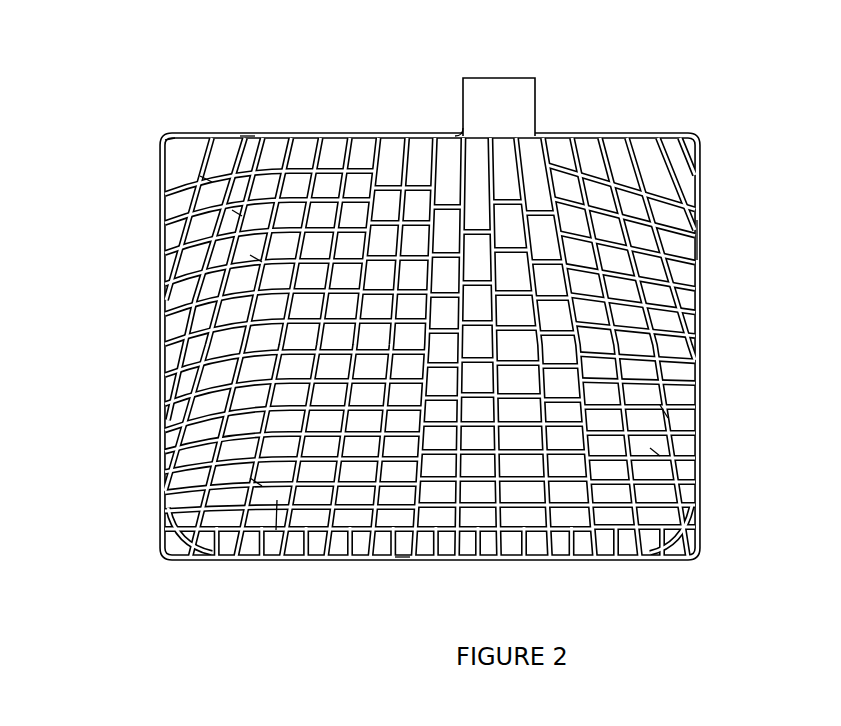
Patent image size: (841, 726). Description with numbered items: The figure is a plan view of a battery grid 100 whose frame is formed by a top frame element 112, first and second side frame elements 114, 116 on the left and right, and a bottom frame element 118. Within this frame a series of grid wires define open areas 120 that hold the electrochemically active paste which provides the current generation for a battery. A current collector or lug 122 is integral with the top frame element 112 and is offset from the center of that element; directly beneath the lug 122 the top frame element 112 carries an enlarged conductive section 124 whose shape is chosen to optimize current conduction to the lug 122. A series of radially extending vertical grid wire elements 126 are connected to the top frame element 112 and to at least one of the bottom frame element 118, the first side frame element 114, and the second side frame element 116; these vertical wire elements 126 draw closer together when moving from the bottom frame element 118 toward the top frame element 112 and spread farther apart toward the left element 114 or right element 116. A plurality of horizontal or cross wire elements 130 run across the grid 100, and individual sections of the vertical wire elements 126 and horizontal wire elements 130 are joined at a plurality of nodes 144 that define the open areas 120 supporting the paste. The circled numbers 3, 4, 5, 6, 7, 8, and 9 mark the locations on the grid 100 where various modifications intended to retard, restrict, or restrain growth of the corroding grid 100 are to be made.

The grid 100 is at (648, 134).
The top frame element 112 is at (587, 137).
The first side frame element 114 is at (165, 394).
The second side frame element 116 is at (700, 347).
The bottom frame element 118 is at (518, 548).
The open areas 120 is at (696, 243).
The lug 122 is at (530, 100).
The enlarged conductive section 124 is at (463, 131).
The vertical grid wire elements 126 is at (665, 412).
The horizontal wire elements 130 is at (655, 452).
The nodes 144 is at (278, 503).
The circled number 3 is at (206, 180).
The circled number 4 is at (237, 213).
The circled number 5 is at (256, 258).
The circled number 6 is at (402, 557).
The circled number 7 is at (246, 137).
The circled number 8 is at (170, 135).
The circled number 9 is at (257, 481).